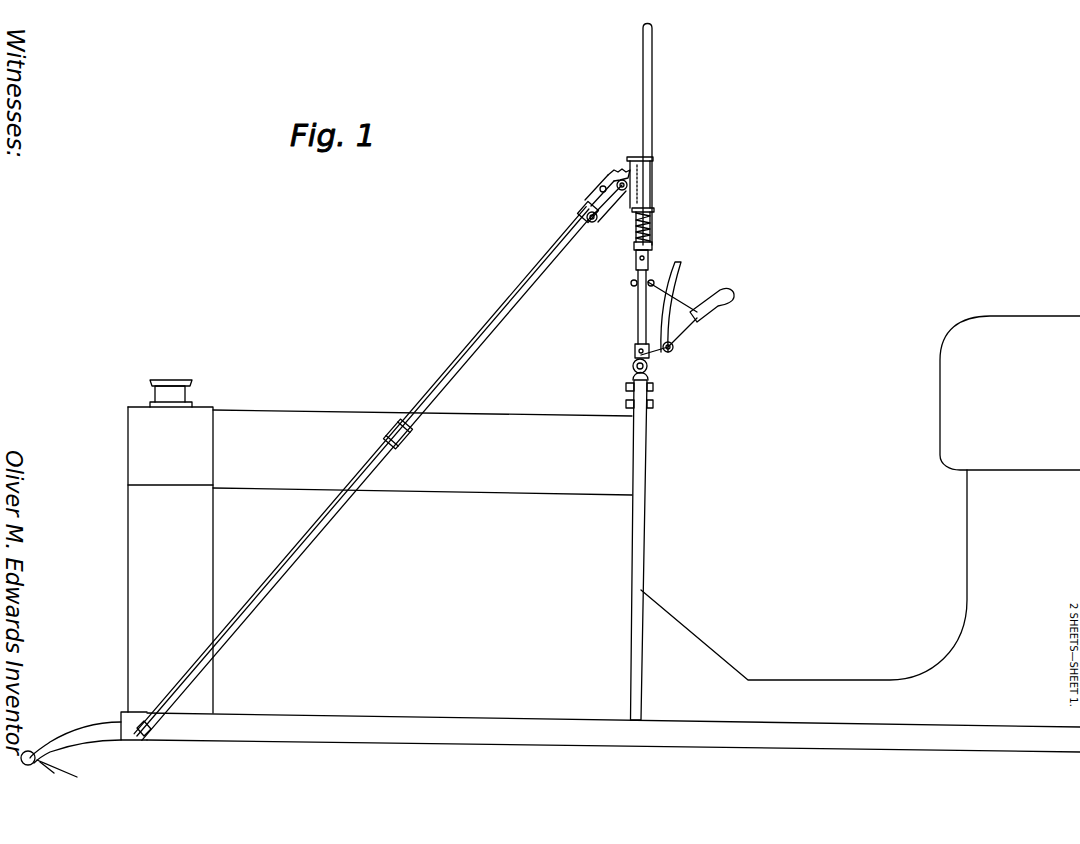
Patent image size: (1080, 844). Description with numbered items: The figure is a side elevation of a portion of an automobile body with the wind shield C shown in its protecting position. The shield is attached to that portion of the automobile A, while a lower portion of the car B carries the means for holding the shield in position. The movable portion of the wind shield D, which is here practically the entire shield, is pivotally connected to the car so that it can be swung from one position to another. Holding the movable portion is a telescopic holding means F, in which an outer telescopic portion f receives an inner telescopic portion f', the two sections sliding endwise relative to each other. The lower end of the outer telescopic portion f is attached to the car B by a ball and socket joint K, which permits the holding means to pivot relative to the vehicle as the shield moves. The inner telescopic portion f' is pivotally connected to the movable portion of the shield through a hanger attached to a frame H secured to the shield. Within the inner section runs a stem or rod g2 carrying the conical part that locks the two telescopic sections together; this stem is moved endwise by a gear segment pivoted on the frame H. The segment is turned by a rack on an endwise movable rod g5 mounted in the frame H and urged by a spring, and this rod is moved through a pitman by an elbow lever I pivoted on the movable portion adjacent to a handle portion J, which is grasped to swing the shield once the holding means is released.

The portion of the automobile A is at (645, 539).
The portion of the car B is at (550, 744).
The wind shield C is at (657, 231).
The movable portion of the wind shield D is at (634, 304).
The telescopic holding means F is at (366, 470).
The outer telescopic portion f is at (345, 523).
The inner telescopic portion f' is at (540, 293).
The frame H is at (630, 156).
The elbow lever I is at (676, 304).
The handle portion J is at (687, 318).
The ball and socket joint K is at (144, 715).
The stem or rod g2 is at (592, 193).
The endwise movable rod g5 is at (657, 173).